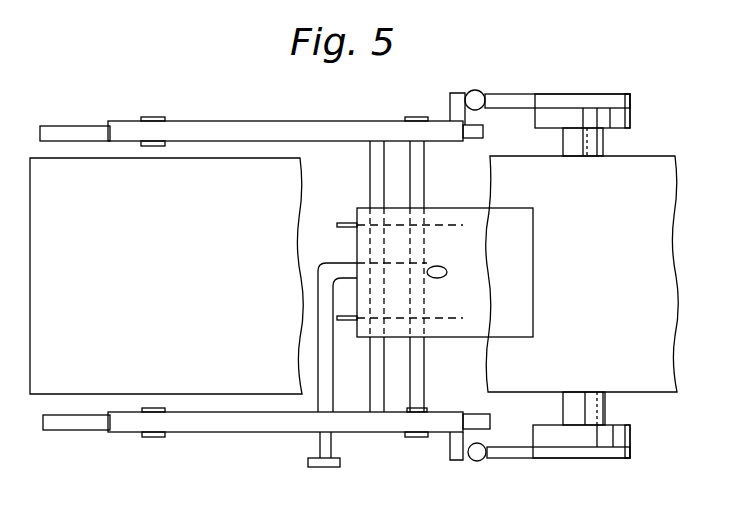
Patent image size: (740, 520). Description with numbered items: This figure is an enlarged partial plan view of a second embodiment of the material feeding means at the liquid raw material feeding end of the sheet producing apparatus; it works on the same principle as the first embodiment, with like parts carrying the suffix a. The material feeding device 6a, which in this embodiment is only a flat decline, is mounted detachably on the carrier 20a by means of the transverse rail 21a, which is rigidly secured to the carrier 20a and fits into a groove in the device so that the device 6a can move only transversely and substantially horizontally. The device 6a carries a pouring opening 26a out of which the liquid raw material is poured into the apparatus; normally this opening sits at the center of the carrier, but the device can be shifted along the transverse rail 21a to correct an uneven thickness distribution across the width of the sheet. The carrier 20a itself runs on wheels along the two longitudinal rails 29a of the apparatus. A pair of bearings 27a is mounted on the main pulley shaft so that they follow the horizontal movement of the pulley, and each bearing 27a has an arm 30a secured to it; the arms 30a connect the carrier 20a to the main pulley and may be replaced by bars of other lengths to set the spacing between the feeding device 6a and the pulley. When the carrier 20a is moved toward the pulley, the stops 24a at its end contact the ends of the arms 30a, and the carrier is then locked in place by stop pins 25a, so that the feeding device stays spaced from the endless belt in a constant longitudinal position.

The material feeding device 6a is at (533, 246).
The carrier 20a is at (192, 292).
The transverse rail 21a is at (370, 168).
The stop 24a is at (458, 93).
The stop pin 25a is at (484, 93).
The pouring opening 26a is at (442, 268).
The bearing 27a is at (620, 115).
The rail 29a is at (75, 130).
The arm 30a is at (562, 102).